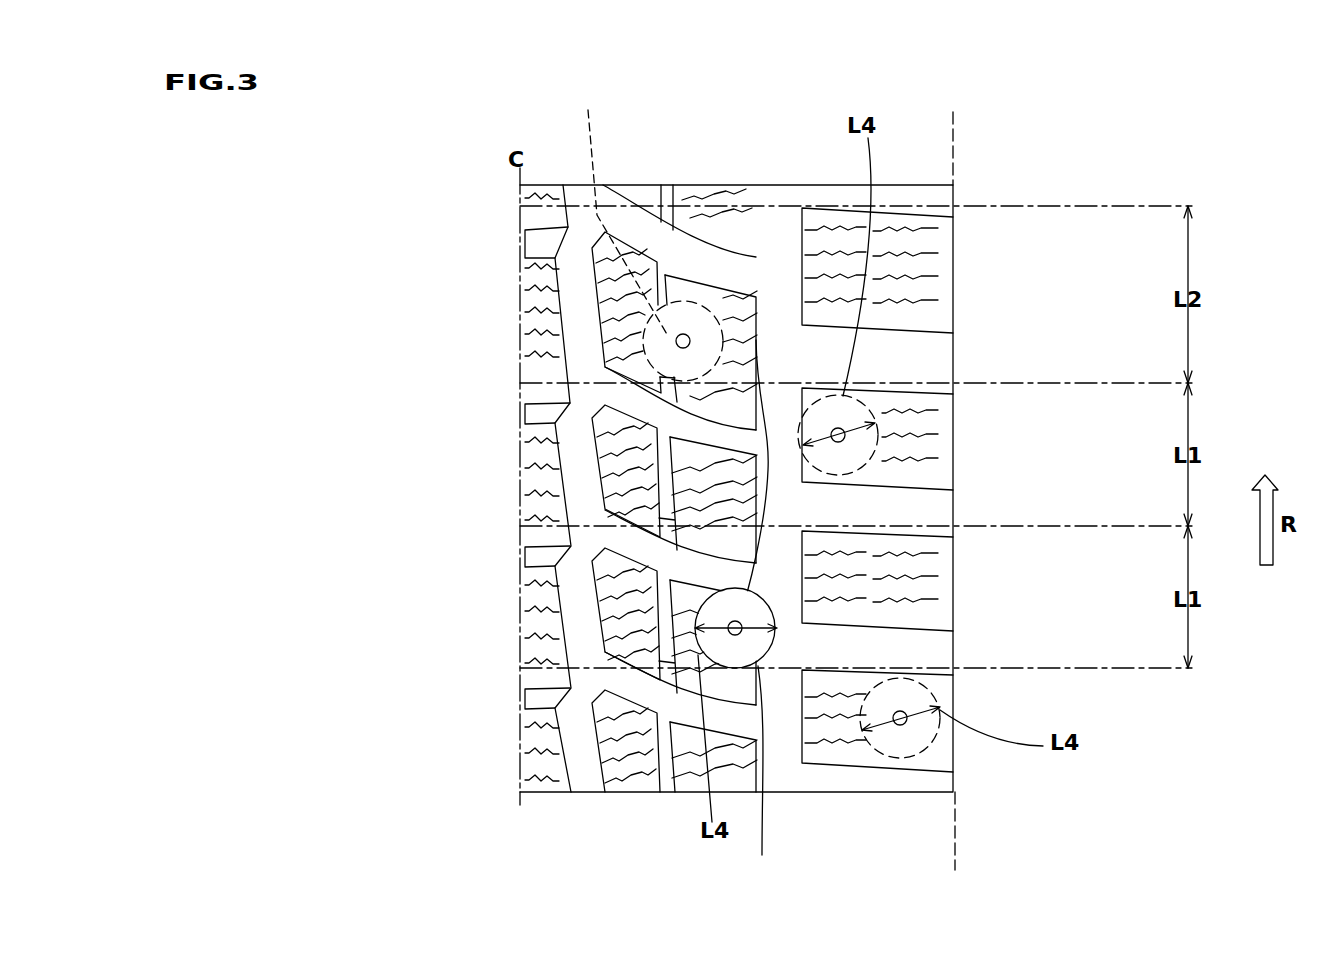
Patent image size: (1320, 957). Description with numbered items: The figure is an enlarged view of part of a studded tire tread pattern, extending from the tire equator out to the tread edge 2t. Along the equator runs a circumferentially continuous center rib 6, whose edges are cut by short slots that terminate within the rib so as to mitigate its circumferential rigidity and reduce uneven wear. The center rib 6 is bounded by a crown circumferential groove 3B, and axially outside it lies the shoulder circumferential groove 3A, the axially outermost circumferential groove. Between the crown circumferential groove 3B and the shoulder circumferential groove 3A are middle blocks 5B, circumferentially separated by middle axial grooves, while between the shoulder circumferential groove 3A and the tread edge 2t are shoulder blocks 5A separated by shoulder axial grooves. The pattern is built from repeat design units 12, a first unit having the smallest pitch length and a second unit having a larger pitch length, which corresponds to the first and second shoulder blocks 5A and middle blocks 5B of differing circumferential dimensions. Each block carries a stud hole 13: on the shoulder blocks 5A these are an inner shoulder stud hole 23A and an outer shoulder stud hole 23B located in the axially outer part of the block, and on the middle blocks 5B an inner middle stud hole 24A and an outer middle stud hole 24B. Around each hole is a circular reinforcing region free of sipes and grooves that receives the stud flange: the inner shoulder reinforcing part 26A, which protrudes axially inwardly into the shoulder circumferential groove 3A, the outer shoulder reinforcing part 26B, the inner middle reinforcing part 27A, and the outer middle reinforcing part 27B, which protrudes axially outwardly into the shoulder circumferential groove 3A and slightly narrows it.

The tread edge 2t is at (953, 158).
The shoulder circumferential groove 3A is at (785, 237).
The crown circumferential groove 3B is at (586, 807).
The shoulder block 5A is at (930, 270).
The middle block 5B is at (620, 320).
The center rib 6 is at (545, 263).
The repeat design unit 12 is at (958, 330).
The stud hole 13 is at (744, 131).
The inner shoulder stud hole 23A is at (845, 442).
The outer shoulder stud hole 23B is at (900, 728).
The inner middle stud hole 24A is at (679, 335).
The outer middle stud hole 24B is at (728, 312).
The inner shoulder reinforcing part 26A is at (802, 423).
The outer shoulder reinforcing part 26B is at (908, 724).
The inner middle reinforcing part 27A is at (617, 212).
The outer middle reinforcing part 27B is at (762, 609).